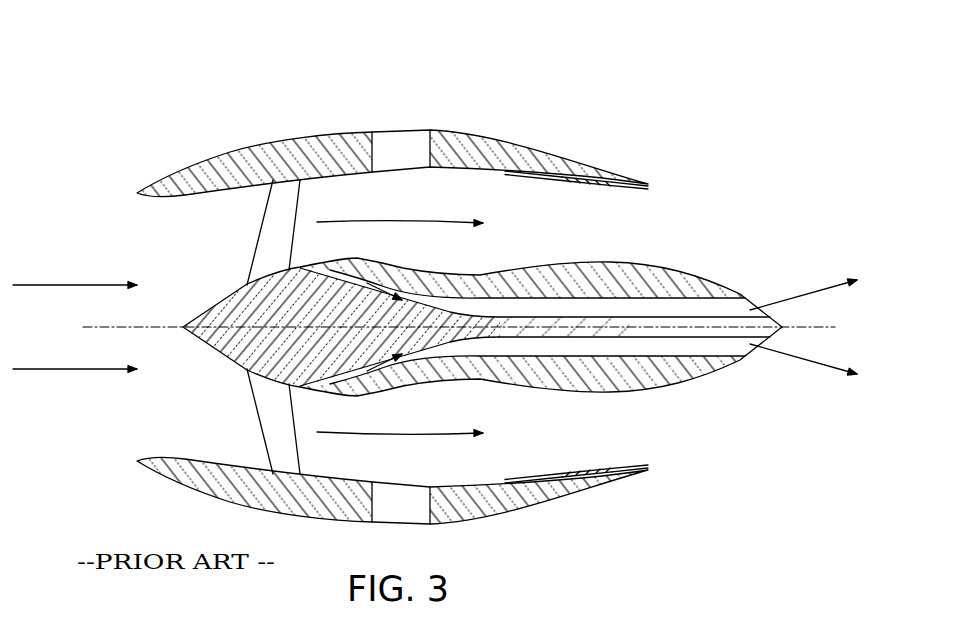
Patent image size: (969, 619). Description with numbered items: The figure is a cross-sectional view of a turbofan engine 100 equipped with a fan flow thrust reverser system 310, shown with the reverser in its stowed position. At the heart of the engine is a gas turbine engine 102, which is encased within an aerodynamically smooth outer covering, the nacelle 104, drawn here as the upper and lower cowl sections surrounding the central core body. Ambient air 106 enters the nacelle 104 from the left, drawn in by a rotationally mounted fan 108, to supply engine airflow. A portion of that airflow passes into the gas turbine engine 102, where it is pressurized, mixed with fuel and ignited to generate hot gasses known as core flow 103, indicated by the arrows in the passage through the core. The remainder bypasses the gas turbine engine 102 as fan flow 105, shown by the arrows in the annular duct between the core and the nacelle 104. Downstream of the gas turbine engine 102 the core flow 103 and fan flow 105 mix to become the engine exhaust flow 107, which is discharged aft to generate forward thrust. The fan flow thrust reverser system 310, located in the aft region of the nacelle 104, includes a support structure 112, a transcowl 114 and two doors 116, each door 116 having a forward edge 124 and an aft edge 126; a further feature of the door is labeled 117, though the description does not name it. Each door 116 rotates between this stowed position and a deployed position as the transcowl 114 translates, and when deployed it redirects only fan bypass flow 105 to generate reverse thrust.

The turbofan engine 100 is at (453, 274).
The gas turbine engine 102 is at (847, 238).
The core flow 103 is at (376, 286).
The nacelle 104 is at (178, 167).
The fan flow 105 is at (410, 215).
The ambient air 106 is at (83, 284).
The engine exhaust flow 107 is at (826, 283).
The fan 108 is at (280, 183).
The support structure 112 is at (396, 131).
The transcowl 114 is at (500, 145).
The door 116 is at (562, 178).
The liner perforated section 117 is at (570, 166).
The forward edge 124 is at (510, 174).
The aft edge 126 is at (610, 185).
The fan flow thrust reverser system 310 is at (648, 132).